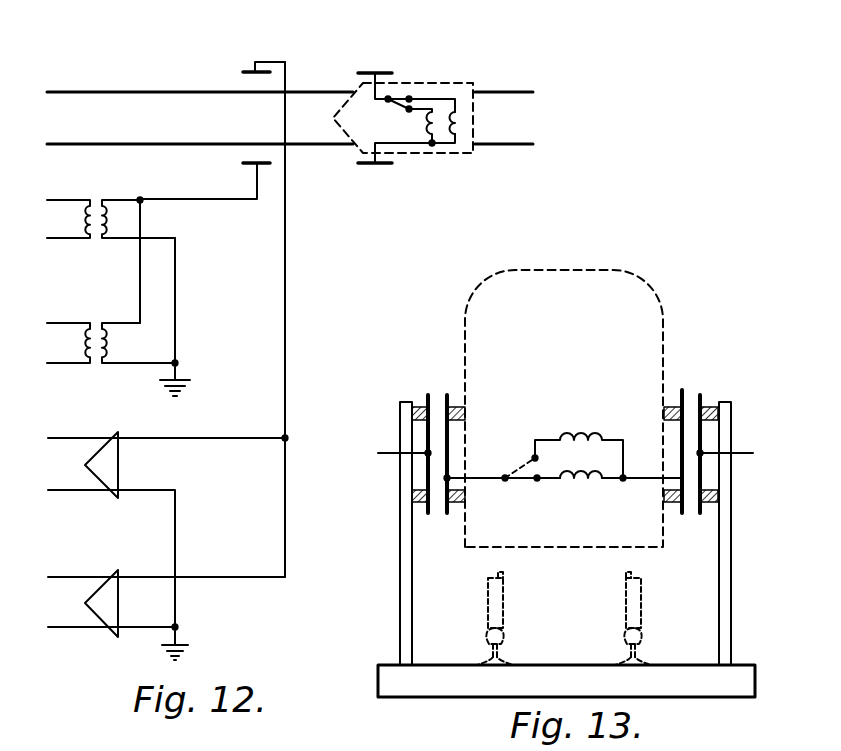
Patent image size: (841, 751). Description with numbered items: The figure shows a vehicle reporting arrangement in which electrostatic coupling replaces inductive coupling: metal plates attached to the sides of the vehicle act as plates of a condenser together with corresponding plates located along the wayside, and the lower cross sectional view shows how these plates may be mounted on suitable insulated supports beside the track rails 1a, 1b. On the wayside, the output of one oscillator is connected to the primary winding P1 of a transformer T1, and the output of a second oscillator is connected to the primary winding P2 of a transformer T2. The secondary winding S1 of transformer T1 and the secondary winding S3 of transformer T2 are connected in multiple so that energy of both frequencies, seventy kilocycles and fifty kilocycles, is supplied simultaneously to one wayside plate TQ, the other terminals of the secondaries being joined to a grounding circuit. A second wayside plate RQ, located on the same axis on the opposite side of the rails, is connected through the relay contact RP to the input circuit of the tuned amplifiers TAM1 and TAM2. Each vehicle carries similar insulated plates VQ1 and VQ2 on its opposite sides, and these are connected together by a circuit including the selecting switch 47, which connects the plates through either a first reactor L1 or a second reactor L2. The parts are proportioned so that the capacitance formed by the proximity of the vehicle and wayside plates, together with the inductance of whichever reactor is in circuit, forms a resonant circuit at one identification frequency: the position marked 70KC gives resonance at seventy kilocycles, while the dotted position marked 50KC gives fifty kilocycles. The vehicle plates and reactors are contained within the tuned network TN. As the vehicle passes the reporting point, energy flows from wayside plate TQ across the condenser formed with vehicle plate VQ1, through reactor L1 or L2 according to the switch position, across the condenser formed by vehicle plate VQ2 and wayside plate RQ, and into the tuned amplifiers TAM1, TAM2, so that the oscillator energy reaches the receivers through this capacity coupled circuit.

In FIG. 12, the track rail 1a is at (130, 91).
In FIG. 13, the track rail 1a is at (503, 649).
In FIG. 12, the track rail 1b is at (121, 143).
In FIG. 13, the track rail 1b is at (625, 649).
In FIG. 12, the relay contact RP is at (267, 45).
In FIG. 12, the wayside receiving plate RQ is at (251, 71).
In FIG. 13, the wayside receiving plate RQ is at (428, 398).
In FIG. 12, the wayside transmitting plate TQ is at (251, 165).
In FIG. 13, the wayside transmitting plate TQ is at (704, 395).
In FIG. 12, the tuned network unit TN is at (352, 85).
In FIG. 13, the tuned network unit TN is at (586, 270).
In FIG. 12, the vehicle plate VQ2 is at (376, 70).
In FIG. 13, the vehicle plate VQ2 is at (447, 397).
In FIG. 12, the vehicle plate VQ1 is at (377, 165).
In FIG. 13, the vehicle plate VQ1 is at (684, 392).
In FIG. 12, the selecting switch 47 is at (410, 97).
In FIG. 13, the selecting switch 47 is at (511, 482).
In FIG. 12, the 70 kc. switch position 70KC is at (404, 103).
In FIG. 13, the 70 kc. switch position 70KC is at (528, 485).
In FIG. 12, the 50 kc. switch position 50KC is at (398, 104).
In FIG. 13, the 50 kc. switch position 50KC is at (530, 461).
In FIG. 12, the first reactor L1 is at (457, 136).
In FIG. 13, the first reactor L1 is at (584, 483).
In FIG. 12, the second reactor L2 is at (426, 125).
In FIG. 13, the second reactor L2 is at (584, 437).
In FIG. 12, the transformer T1 is at (111, 206).
In FIG. 12, the transformer T2 is at (111, 330).
In FIG. 12, the primary winding P1 is at (83, 220).
In FIG. 12, the secondary winding S1 is at (106, 218).
In FIG. 12, the primary winding P2 is at (83, 343).
In FIG. 12, the secondary winding S3 is at (107, 341).
In FIG. 12, the tuned amplifier TAM1 is at (114, 436).
In FIG. 12, the tuned amplifier TAM2 is at (114, 575).